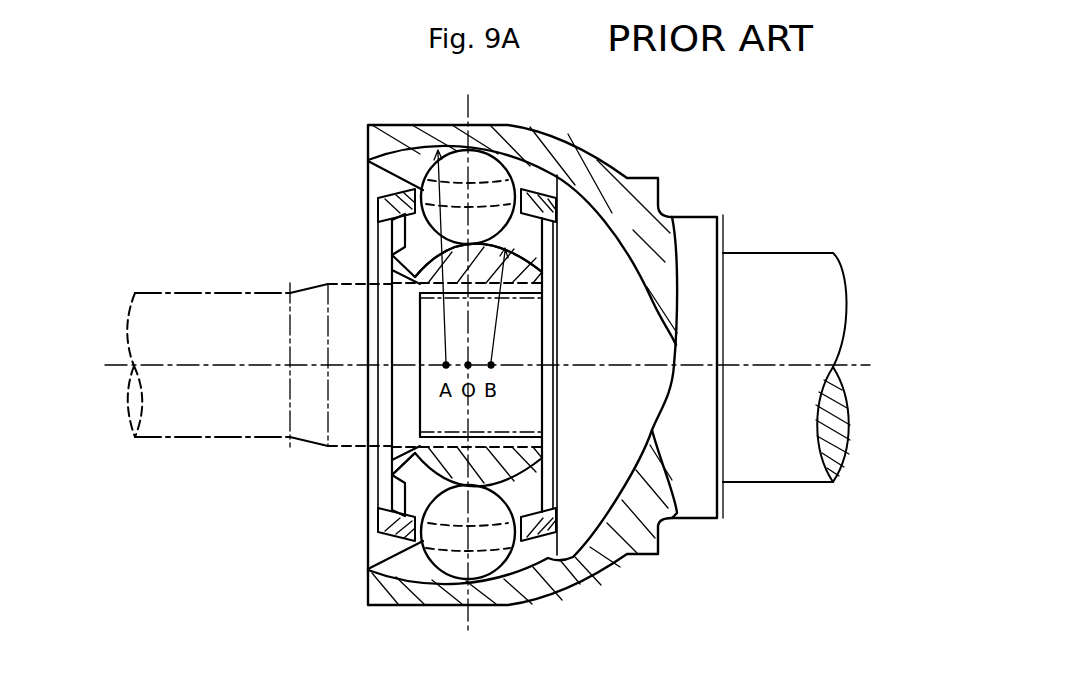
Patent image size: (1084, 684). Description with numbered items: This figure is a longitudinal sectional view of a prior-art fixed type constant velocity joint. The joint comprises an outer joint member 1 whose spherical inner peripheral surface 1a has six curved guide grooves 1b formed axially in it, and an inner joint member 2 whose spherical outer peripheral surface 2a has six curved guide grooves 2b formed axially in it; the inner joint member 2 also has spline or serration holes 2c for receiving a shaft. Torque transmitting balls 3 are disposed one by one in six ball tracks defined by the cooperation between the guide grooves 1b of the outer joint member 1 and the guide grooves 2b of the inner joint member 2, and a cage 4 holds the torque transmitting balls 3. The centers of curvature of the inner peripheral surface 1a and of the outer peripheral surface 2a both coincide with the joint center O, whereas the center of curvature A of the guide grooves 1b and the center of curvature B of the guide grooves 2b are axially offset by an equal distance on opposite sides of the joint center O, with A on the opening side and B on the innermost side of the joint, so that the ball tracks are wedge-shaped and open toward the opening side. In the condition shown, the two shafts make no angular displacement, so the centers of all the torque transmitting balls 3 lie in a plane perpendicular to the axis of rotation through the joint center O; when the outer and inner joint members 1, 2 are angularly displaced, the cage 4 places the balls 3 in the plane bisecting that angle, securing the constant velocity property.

The outer joint member 1 is at (366, 137).
The spherical inner peripheral surface 1a is at (526, 546).
The curved guide grooves 1b is at (513, 169).
The inner joint member 2 is at (405, 237).
The spherical outer peripheral surface 2a is at (418, 546).
The curved guide grooves 2b is at (518, 253).
The spline holes 2c is at (522, 300).
The torque transmitting balls 3 is at (428, 172).
The cage 4 is at (537, 185).